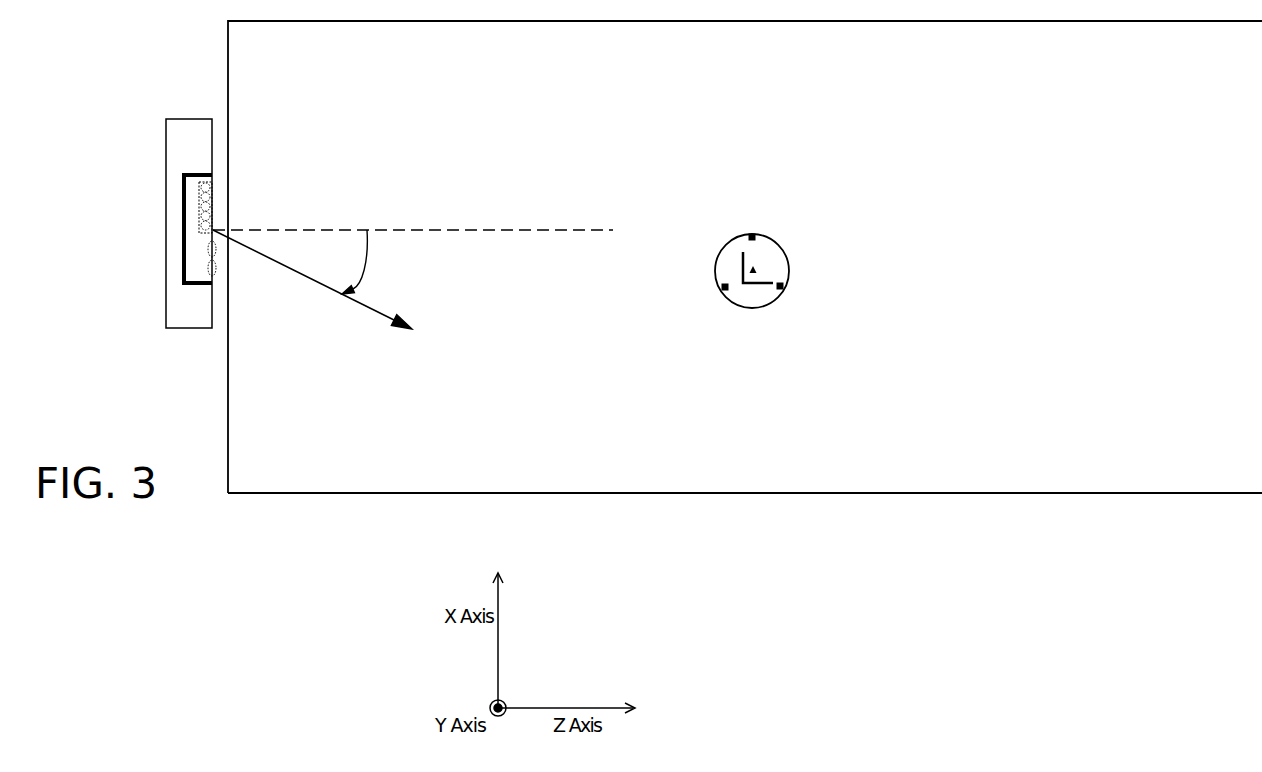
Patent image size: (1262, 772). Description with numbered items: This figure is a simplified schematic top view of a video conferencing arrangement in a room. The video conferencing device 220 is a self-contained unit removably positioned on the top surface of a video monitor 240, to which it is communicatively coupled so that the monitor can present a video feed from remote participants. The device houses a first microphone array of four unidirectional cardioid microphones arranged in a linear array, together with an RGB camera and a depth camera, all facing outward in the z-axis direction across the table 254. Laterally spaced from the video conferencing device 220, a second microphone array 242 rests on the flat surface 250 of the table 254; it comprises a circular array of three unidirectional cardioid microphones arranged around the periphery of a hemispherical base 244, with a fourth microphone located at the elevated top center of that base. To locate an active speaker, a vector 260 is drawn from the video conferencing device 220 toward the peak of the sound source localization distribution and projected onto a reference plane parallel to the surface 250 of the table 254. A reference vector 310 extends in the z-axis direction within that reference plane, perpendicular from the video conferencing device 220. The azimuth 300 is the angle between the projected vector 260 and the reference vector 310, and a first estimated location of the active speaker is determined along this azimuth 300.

The video conferencing device 220 is at (197, 174).
The video monitor 240 is at (166, 276).
The second microphone array 242 is at (730, 325).
The hemispherical base 244 is at (779, 246).
The flat surface 250 is at (745, 294).
The table 254 is at (400, 494).
The vector 260 is at (312, 280).
The azimuth 300 is at (366, 273).
The reference vector 310 is at (445, 230).